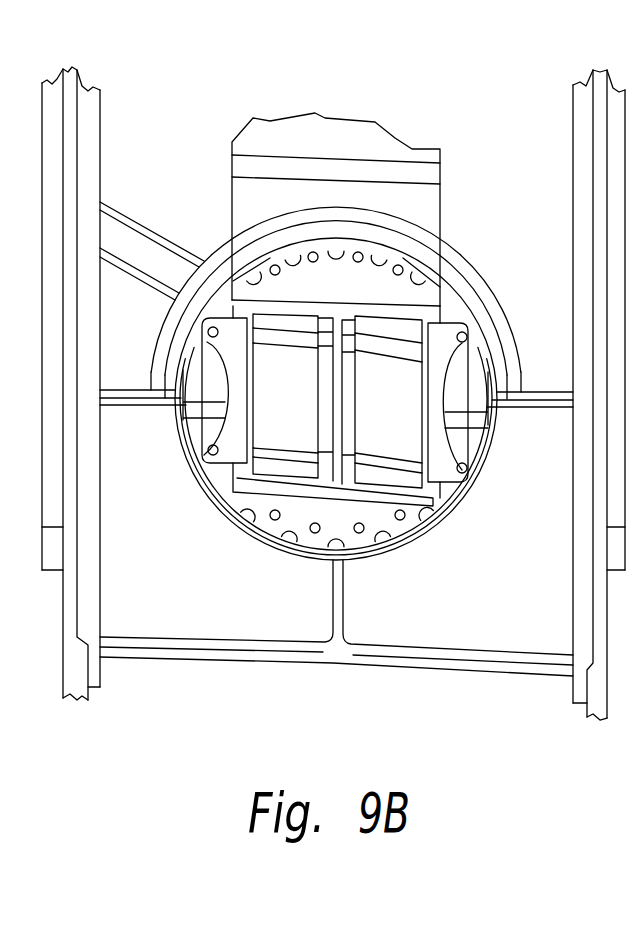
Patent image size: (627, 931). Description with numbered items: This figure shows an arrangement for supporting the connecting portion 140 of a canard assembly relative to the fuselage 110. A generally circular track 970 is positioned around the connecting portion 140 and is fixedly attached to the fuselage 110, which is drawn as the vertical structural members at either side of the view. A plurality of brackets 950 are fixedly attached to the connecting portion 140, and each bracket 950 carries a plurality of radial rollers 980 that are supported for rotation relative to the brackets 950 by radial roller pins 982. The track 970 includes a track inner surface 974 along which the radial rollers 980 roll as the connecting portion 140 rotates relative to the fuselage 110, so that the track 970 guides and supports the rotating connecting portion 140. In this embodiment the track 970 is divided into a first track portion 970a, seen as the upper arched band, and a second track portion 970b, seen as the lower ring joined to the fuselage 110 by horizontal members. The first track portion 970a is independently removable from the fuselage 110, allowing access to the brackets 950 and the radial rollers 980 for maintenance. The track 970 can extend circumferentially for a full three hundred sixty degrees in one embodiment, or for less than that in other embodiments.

The fuselage 110 is at (88, 124).
The connecting portion 140 is at (255, 278).
The bracket 950 is at (297, 270).
The track 970 is at (494, 260).
The first track portion 970a is at (442, 252).
The second track portion 970b is at (463, 500).
The track inner surface 974 is at (205, 432).
The radial roller 980 is at (386, 254).
The radial roller pin 982 is at (360, 256).